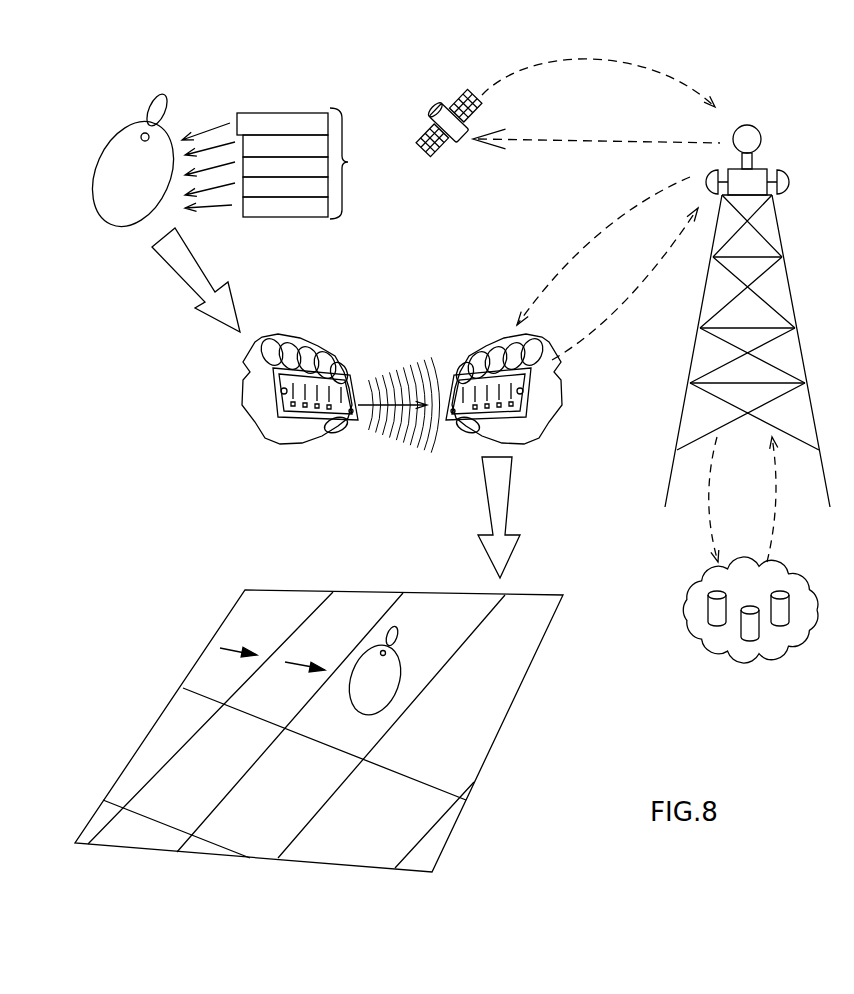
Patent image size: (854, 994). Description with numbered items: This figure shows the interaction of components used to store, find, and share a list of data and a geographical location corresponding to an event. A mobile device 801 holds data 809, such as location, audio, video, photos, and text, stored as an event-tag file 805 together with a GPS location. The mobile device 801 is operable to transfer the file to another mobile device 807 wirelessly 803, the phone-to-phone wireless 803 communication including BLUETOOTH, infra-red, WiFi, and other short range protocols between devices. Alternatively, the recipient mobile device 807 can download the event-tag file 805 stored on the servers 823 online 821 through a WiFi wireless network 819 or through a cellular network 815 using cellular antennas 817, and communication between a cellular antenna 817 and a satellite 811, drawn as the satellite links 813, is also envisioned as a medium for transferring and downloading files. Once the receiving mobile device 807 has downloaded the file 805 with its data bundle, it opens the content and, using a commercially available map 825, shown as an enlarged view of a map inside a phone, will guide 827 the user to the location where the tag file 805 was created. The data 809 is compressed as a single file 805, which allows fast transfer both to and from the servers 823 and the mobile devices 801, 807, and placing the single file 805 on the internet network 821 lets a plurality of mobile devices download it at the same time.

The mobile device 801 is at (278, 405).
The wireless phone-to-phone communication 803 is at (395, 412).
The event-tag file 805 is at (123, 228).
The recipient mobile device 807 is at (460, 367).
The data 809 is at (285, 163).
The satellite 811 is at (432, 117).
The satellite communication links 813 is at (606, 68).
The cellular network 815 is at (580, 250).
The cellular antenna 817 is at (792, 328).
The WiFi wireless network 819 is at (710, 536).
The internet network 821 is at (683, 592).
The servers 823 is at (708, 612).
The map 825 is at (270, 588).
The guide 827 is at (307, 660).